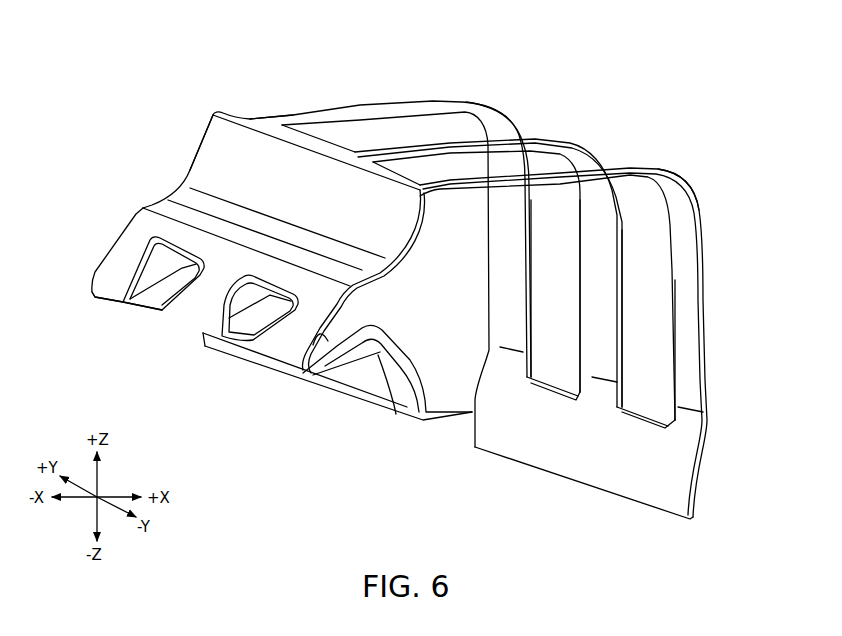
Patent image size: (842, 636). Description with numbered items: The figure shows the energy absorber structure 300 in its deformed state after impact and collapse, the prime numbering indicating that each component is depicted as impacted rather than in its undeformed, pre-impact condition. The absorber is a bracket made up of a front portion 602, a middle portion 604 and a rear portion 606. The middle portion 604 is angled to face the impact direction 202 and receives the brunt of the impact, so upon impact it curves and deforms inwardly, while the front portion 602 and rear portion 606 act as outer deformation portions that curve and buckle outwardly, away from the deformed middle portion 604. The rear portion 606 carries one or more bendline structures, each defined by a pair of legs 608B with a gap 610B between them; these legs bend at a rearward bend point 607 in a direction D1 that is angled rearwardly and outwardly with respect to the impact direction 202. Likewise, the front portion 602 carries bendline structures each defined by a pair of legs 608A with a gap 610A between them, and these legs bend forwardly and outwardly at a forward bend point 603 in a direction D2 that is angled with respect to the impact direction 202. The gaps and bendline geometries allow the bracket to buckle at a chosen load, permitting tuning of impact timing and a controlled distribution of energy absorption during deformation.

The energy absorber structure 300 is at (673, 94).
The impact direction 202 is at (108, 118).
The middle portion 604 is at (141, 111).
The front portion 602 is at (88, 245).
The forward bend point 603 is at (96, 307).
The rear portion 606 is at (733, 208).
The rearward bend point 607 is at (681, 172).
The pair of legs 608A is at (140, 236).
The pair of legs 608B is at (377, 112).
The gap 610A is at (160, 318).
The gap 610B is at (542, 310).
The direction D1 is at (781, 265).
The direction D2 is at (77, 407).